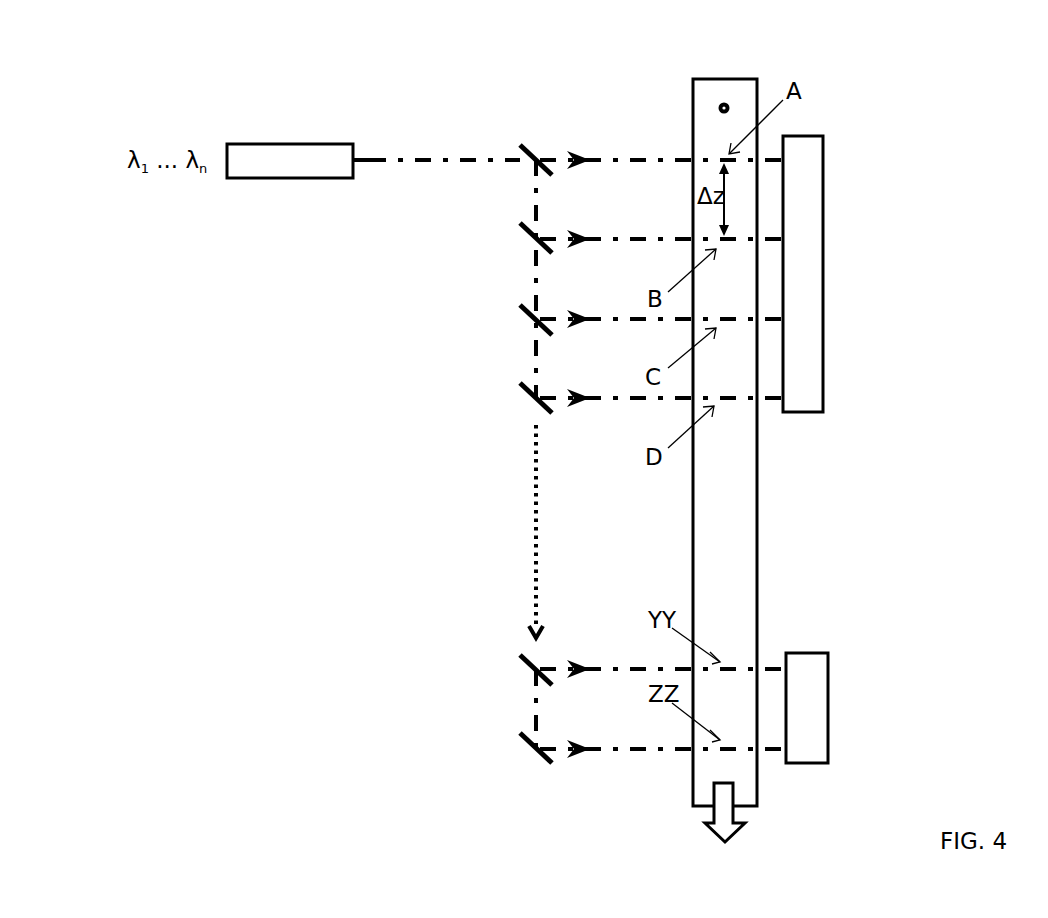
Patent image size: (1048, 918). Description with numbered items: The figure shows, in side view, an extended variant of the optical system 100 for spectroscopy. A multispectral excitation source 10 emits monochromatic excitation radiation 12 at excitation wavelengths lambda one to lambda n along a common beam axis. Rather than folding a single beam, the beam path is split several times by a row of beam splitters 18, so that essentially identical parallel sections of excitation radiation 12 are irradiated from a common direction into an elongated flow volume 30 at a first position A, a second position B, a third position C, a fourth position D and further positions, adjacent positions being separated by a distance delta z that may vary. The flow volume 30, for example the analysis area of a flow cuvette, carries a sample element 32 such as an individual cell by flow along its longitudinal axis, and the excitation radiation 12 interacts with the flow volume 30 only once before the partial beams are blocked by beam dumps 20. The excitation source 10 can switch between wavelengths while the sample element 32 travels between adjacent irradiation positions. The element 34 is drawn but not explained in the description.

The excitation source 10 is at (267, 143).
The excitation radiation 12 is at (451, 155).
The beam splitters 18 is at (530, 163).
The beam dump 20 is at (820, 132).
The flow volume 30 is at (684, 78).
The sample element 32 is at (712, 105).
The channel wall 34 is at (712, 140).
The optical system 100 is at (442, 412).